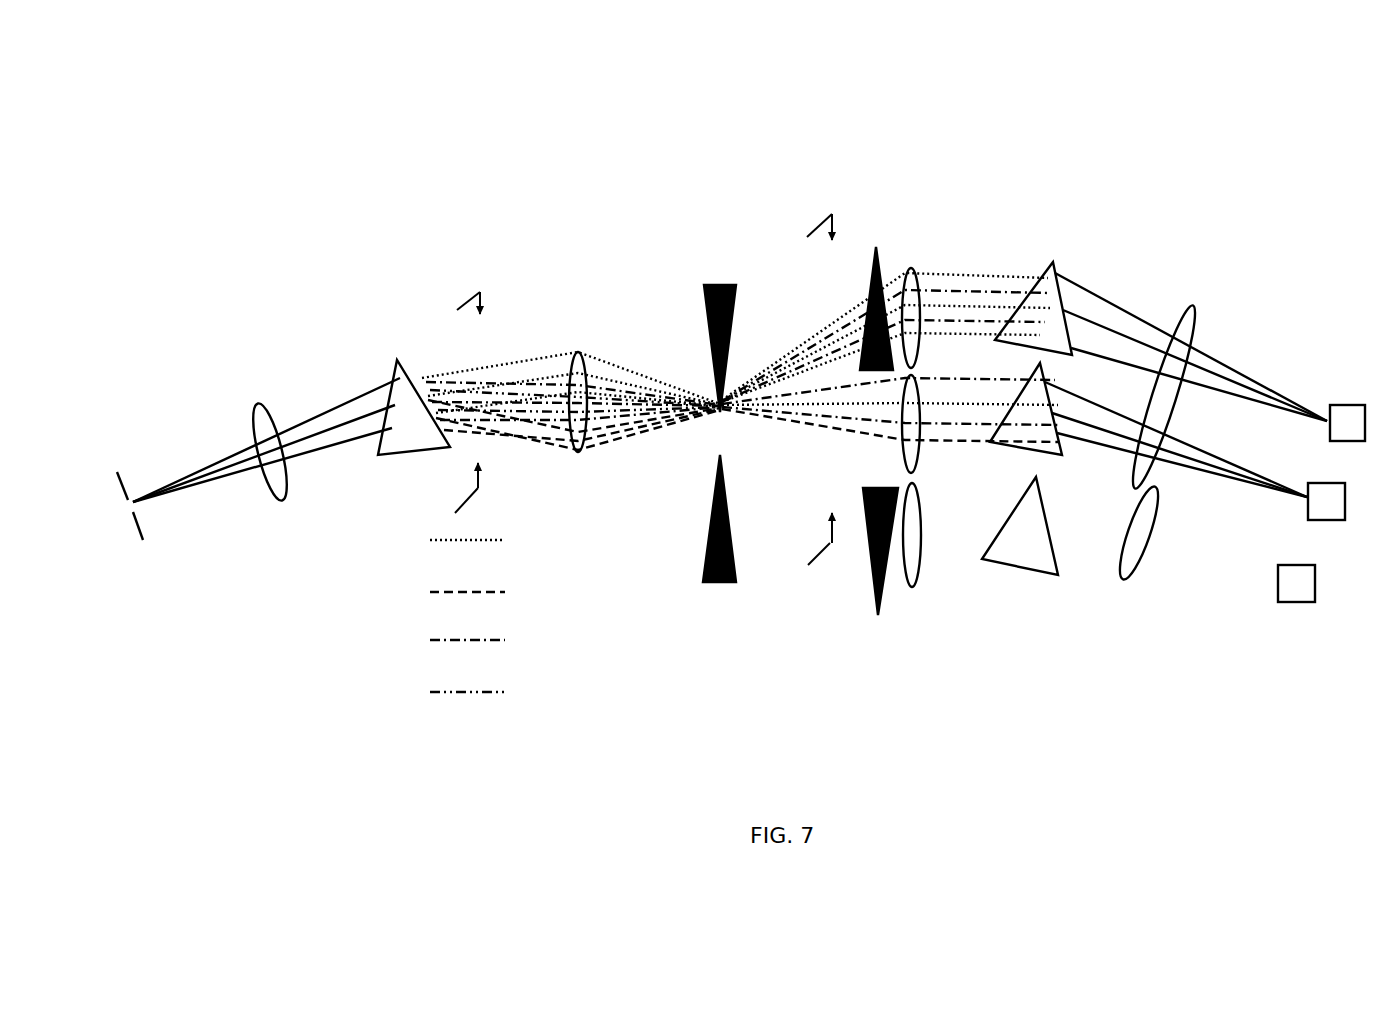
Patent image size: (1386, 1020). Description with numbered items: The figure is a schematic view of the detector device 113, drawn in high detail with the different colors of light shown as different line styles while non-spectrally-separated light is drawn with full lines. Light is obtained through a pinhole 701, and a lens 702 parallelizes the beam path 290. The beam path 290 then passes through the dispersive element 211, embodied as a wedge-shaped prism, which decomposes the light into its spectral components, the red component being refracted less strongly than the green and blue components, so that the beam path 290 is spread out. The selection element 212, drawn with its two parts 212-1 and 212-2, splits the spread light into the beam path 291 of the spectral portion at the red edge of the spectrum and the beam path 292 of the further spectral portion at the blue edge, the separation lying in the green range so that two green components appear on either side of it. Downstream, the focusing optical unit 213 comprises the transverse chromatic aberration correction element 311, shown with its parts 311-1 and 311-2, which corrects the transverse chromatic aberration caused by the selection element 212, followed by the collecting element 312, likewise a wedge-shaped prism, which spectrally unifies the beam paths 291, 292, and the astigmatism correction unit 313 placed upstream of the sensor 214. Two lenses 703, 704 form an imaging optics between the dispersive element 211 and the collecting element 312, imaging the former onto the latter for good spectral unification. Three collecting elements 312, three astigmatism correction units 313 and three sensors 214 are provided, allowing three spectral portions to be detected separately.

The detector device 113 is at (1278, 117).
The pinhole 701 is at (126, 474).
The lens 702 is at (269, 401).
The beam path 290 is at (324, 403).
The dispersive element 211 is at (397, 357).
The lens 703 is at (580, 353).
The selection element 212 is at (726, 408).
The selection element part 212-1 is at (742, 282).
The selection element part 212-2 is at (703, 588).
The beam path of the specific spectral portion 291 is at (850, 288).
The beam path of the further spectral portion 292 is at (818, 458).
The transverse chromatic aberration correction element 311 is at (885, 404).
The transverse chromatic aberration correction element part 311-1 is at (876, 244).
The transverse chromatic aberration correction element part 311-2 is at (876, 618).
The lens 704 is at (916, 270).
The focusing optical unit 213 is at (1053, 347).
The collecting element 312 is at (1056, 260).
The astigmatism correction unit 313 is at (1196, 302).
The sensor 214 is at (1352, 401).